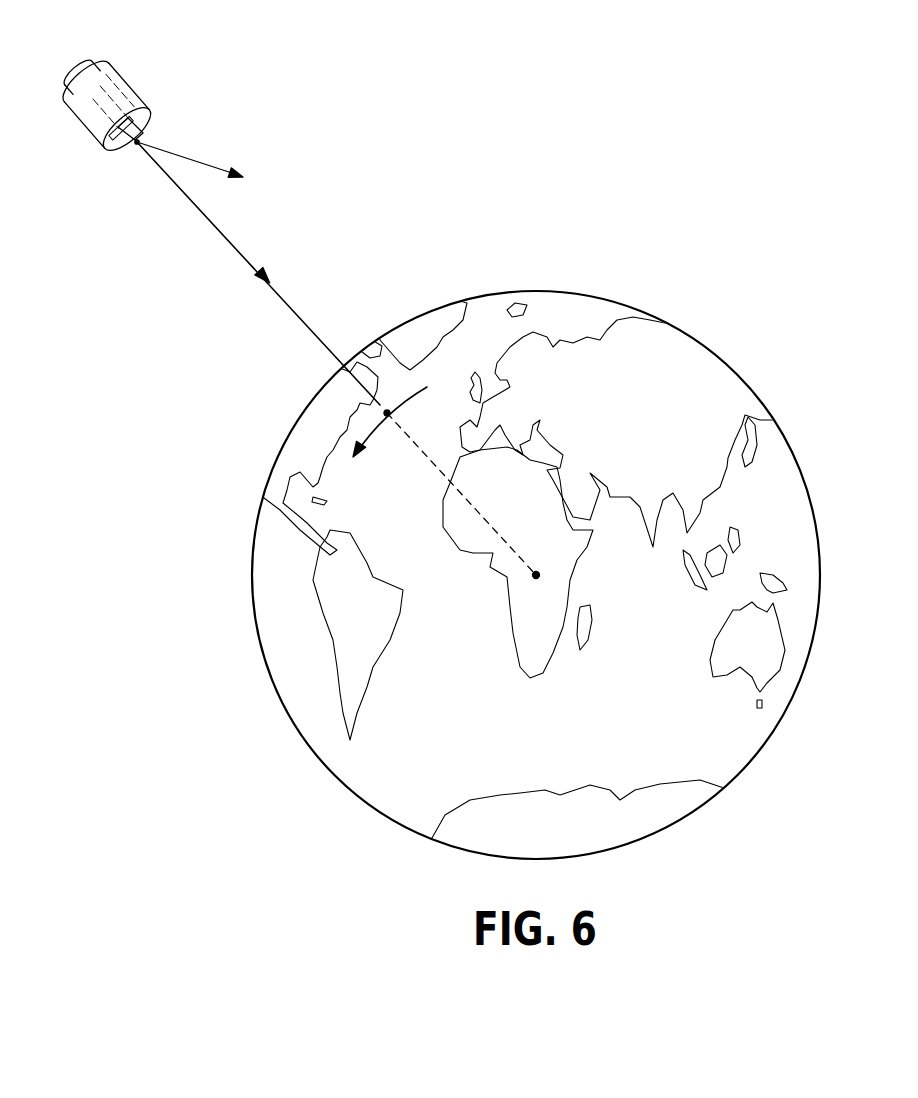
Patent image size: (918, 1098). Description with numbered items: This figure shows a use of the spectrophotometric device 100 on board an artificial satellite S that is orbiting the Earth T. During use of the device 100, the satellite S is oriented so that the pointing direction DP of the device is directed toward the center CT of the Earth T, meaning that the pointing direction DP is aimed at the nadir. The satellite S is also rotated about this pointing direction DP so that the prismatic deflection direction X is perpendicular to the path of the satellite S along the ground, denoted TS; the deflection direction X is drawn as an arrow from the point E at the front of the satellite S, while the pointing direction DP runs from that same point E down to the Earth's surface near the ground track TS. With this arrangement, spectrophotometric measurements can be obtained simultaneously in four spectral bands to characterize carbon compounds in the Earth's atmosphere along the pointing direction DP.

The satellite S is at (120, 72).
The spectrophotometric device 100 is at (140, 130).
The emission point E is at (130, 165).
The prismatic deflection direction X is at (201, 170).
The pointing direction DP is at (258, 273).
The path of the satellite along the ground TS is at (432, 481).
The center of the Earth CT is at (536, 575).
The Earth T is at (810, 488).